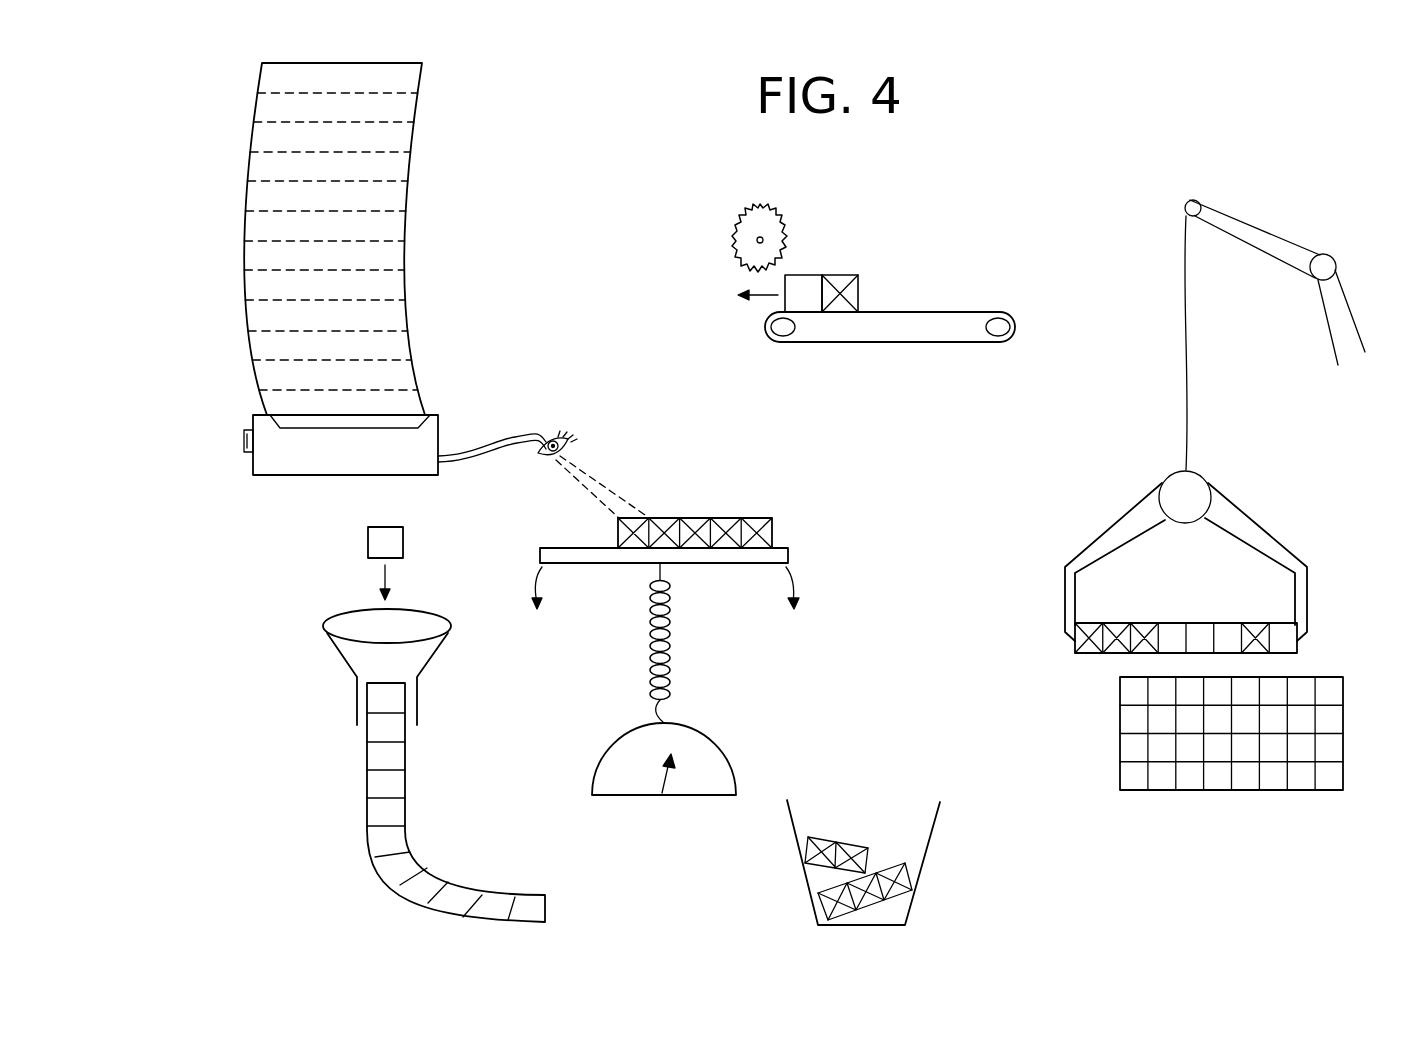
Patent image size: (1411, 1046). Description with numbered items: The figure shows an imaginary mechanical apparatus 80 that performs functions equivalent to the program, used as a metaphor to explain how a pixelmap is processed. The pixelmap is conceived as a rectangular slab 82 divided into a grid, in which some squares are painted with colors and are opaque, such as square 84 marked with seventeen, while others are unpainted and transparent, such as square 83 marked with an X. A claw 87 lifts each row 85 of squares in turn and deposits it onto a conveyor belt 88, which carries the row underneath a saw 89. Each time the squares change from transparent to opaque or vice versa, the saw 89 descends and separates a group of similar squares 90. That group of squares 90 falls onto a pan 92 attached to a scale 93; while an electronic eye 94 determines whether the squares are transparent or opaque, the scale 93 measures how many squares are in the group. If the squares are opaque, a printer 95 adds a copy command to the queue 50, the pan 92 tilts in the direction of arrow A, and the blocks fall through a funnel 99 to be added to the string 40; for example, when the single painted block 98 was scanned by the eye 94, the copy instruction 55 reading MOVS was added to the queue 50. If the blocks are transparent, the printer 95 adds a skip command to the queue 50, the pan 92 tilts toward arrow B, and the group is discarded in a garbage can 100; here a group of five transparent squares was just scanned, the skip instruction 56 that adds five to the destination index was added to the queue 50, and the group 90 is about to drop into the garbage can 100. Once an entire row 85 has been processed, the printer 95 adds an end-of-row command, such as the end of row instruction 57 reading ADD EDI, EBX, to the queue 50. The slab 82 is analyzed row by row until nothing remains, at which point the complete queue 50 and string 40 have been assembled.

The string 40 is at (407, 813).
The queue 50 is at (334, 239).
The copy instruction 55 is at (251, 348).
The skip instruction 56 is at (260, 381).
The end of row instruction 57 is at (246, 316).
The imaginary mechanical apparatus 80 is at (1042, 140).
The rectangular slab 82 is at (1138, 812).
The transparent square 83 is at (1088, 622).
The opaque square 84 is at (1283, 623).
The row of squares 85 is at (1134, 624).
The claw 87 is at (1240, 516).
The conveyor belt 88 is at (960, 345).
The saw 89 is at (782, 222).
The group of similar squares 90 is at (774, 530).
The pan 92 is at (735, 568).
The scale 93 is at (718, 746).
The electronic eye 94 is at (553, 432).
The printer 95 is at (266, 478).
The painted block 98 is at (368, 548).
The funnel 99 is at (343, 656).
The garbage can 100 is at (793, 842).